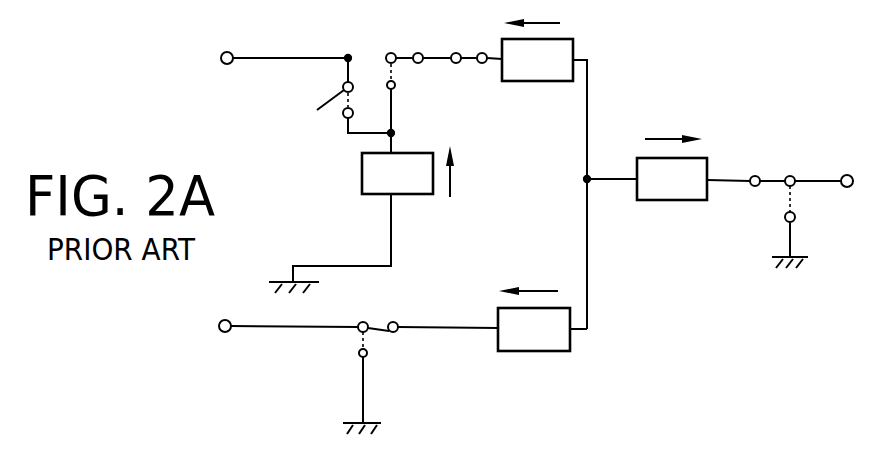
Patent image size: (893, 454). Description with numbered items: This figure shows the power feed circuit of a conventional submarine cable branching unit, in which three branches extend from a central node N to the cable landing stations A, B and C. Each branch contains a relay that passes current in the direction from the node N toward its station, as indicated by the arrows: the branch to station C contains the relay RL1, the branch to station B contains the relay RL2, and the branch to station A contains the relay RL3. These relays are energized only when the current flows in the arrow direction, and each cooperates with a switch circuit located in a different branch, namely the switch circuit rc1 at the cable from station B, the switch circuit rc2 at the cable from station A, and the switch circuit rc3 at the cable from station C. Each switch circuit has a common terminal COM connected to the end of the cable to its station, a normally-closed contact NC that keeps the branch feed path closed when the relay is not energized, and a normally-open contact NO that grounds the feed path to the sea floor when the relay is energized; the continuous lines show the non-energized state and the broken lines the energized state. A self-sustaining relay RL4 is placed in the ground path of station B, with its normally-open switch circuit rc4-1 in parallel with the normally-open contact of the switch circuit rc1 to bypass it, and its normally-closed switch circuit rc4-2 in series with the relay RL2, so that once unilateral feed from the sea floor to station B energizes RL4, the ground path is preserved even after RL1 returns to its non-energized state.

The relay RL1 is at (542, 319).
The relay RL2 is at (544, 174).
The relay RL3 is at (672, 167).
The self-sustaining relay RL4 is at (361, 219).
The switch circuit rc1 is at (407, 108).
The switch circuit rc2 is at (803, 228).
The switch circuit rc3 is at (420, 378).
The normally-open switch circuit rc4-1 is at (313, 95).
The normally-closed switch circuit rc4-2 is at (472, 75).
The station A is at (857, 185).
The station B is at (272, 58).
The station C is at (274, 325).
The central node N is at (588, 177).
The common terminal COM is at (790, 176).
The normally-closed contact NC is at (754, 176).
The normally-open contact NO is at (785, 219).